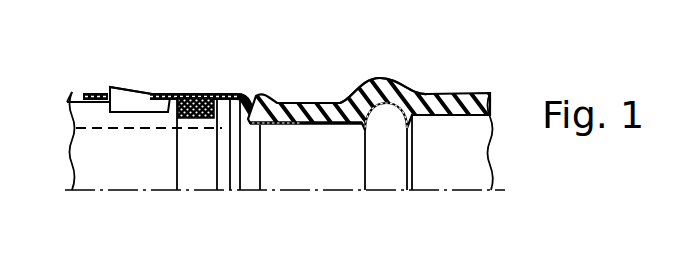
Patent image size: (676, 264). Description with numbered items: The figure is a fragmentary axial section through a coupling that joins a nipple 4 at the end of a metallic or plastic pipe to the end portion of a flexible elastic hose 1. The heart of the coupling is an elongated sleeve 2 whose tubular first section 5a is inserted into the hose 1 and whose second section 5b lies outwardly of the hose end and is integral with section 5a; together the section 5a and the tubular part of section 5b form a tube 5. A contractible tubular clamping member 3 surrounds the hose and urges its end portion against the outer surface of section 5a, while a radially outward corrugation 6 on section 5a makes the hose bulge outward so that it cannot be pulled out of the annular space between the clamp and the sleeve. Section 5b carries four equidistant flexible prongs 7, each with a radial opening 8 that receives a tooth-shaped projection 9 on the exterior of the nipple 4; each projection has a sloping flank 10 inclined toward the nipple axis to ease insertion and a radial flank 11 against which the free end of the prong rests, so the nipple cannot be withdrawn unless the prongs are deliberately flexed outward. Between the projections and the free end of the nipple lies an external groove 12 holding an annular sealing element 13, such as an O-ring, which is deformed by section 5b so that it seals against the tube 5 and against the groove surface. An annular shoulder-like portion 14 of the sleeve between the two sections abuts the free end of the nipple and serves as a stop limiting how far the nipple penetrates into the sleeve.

The hose 1 is at (466, 92).
The sleeve 2 is at (243, 84).
The tubular clamping member 3 is at (308, 102).
The nipple 4 is at (72, 93).
The tube 5 is at (298, 126).
The tubular first section 5a is at (333, 127).
The second section 5b is at (212, 95).
The corrugation 6 is at (390, 93).
The prongs 7 is at (98, 91).
The opening 8 is at (165, 92).
The projections 9 is at (125, 88).
The sloping flank 10 is at (123, 100).
The radial flank 11 is at (110, 105).
The groove 12 is at (178, 190).
The sealing element 13 is at (193, 95).
The shoulder-like portion 14 is at (253, 126).